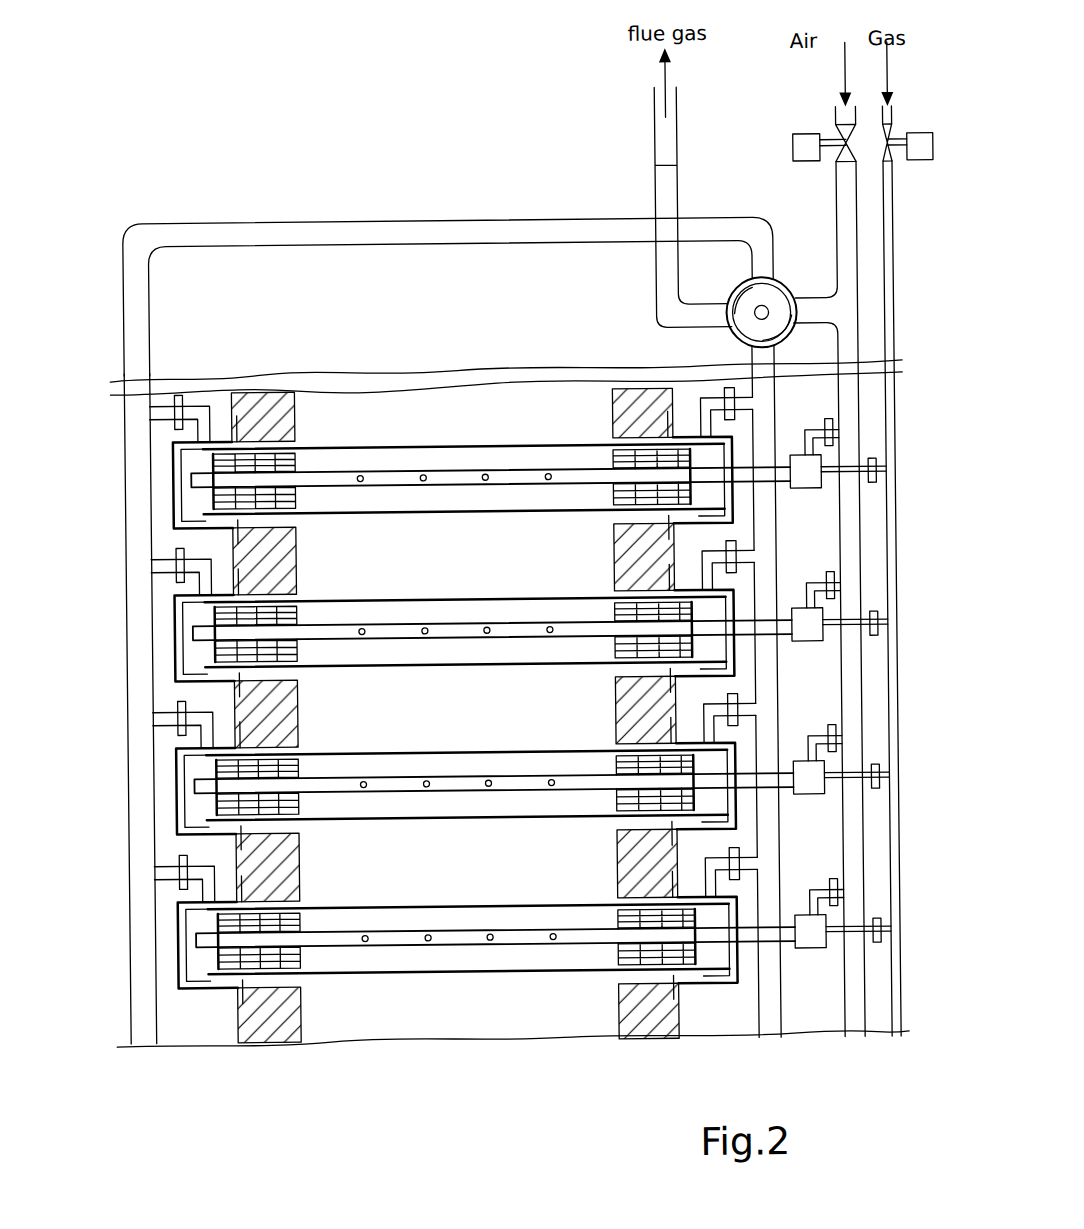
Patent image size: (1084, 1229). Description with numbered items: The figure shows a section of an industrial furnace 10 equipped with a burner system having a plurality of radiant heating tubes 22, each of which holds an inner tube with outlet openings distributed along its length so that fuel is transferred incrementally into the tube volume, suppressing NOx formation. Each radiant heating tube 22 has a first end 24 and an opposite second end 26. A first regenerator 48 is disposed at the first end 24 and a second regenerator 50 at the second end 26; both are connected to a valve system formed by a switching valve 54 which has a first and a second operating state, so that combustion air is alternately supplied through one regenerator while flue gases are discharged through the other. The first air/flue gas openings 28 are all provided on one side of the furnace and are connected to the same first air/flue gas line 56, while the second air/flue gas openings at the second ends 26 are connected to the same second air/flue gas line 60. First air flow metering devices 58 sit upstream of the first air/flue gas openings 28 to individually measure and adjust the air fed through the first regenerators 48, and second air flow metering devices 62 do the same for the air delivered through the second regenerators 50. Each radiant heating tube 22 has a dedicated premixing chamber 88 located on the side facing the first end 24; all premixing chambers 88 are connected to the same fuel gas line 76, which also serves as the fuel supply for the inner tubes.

The industrial furnace 10 is at (104, 225).
The radiant heating tube 22 is at (236, 574).
The first end 24 is at (736, 492).
The second end 26 is at (116, 480).
The first air/flue gas opening 28 is at (742, 418).
The first regenerator 48 is at (605, 462).
The second regenerator 50 is at (300, 446).
The switching valve 54 is at (793, 290).
The first air/flue gas line 56 is at (800, 340).
The first air flow metering device 58 is at (770, 385).
The second air/flue gas line 60 is at (239, 220).
The second air flow metering device 62 is at (176, 408).
The fuel gas line 76 is at (899, 204).
The premixing chamber 88 is at (838, 455).